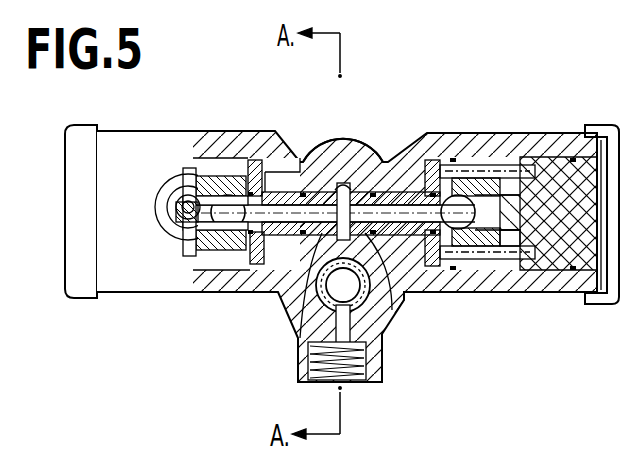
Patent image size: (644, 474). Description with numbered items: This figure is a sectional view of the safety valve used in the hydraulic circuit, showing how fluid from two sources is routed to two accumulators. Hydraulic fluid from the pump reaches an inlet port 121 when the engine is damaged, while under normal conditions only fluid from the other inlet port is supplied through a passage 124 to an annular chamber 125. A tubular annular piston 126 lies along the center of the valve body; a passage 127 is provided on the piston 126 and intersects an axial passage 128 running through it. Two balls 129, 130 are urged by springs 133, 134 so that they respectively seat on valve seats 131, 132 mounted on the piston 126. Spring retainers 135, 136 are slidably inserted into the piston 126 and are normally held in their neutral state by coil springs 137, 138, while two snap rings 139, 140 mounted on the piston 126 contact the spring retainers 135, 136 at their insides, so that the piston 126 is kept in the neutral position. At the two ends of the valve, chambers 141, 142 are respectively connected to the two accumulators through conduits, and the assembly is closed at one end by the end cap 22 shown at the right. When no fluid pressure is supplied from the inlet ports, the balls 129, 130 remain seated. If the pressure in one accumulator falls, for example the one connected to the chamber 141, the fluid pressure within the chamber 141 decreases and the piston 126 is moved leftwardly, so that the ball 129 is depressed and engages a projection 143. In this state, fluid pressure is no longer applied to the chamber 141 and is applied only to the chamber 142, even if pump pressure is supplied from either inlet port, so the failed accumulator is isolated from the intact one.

The end cap 22 is at (585, 108).
The inlet port 121 is at (350, 150).
The passage 124 is at (348, 182).
The annular chamber 125 is at (378, 322).
The tubular annular piston 126 is at (410, 293).
The passage 127 is at (300, 320).
The axial passage 128 is at (240, 235).
The ball 129 is at (205, 238).
The ball 130 is at (480, 213).
The valve seat 131 is at (282, 160).
The valve seat 132 is at (470, 292).
The spring 133 is at (186, 178).
The spring 134 is at (500, 180).
The spring retainer 135 is at (254, 160).
The spring retainer 136 is at (430, 160).
The coil spring 137 is at (192, 258).
The coil spring 138 is at (522, 160).
The snap ring 139 is at (256, 262).
The snap ring 140 is at (420, 250).
The chamber 141 is at (185, 182).
The chamber 142 is at (506, 242).
The projection 143 is at (170, 199).